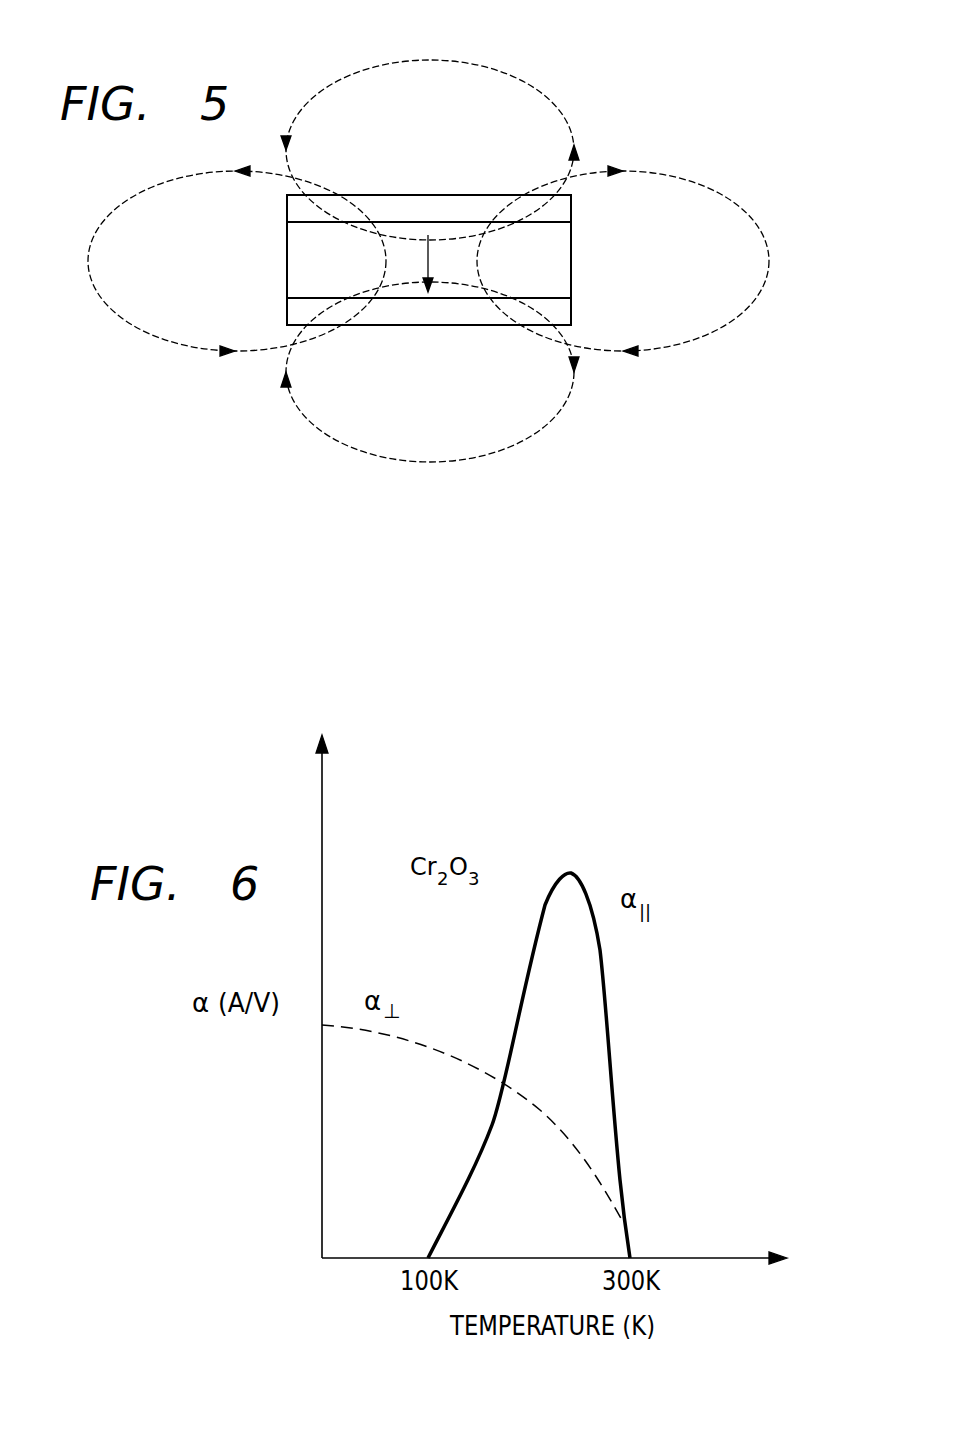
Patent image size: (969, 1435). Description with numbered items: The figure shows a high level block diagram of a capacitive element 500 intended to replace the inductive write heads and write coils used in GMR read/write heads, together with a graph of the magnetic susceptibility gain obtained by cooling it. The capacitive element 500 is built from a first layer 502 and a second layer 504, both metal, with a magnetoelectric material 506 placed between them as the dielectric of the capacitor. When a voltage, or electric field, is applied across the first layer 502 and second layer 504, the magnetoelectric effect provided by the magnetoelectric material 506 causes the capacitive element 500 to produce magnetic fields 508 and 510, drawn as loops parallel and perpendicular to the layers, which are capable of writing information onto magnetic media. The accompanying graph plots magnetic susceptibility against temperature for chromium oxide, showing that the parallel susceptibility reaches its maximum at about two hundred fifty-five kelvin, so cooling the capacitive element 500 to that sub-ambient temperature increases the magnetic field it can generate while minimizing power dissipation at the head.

The capacitive element 500 is at (377, 326).
The first layer 502 is at (571, 207).
The second layer 504 is at (571, 312).
The magnetoelectric material 506 is at (571, 262).
The magnetic field 508 is at (768, 262).
The magnetic field 510 is at (430, 60).